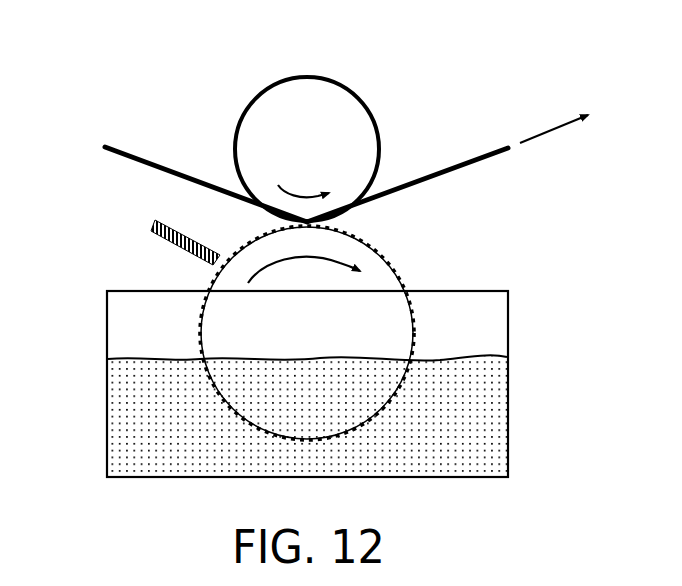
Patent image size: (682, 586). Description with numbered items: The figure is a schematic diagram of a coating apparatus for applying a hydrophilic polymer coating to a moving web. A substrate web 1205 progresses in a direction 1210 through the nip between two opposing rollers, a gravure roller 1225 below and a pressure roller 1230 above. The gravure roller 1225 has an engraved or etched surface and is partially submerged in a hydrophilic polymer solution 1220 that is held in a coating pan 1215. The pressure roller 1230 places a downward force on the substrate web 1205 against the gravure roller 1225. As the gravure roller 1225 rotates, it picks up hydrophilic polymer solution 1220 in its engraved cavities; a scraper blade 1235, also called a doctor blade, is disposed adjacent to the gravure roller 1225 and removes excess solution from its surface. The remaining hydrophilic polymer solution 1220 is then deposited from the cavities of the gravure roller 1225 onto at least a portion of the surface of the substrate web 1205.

The substrate web 1205 is at (420, 183).
The direction 1210 is at (550, 133).
The coating pan 1215 is at (508, 330).
The hydrophilic polymer solution 1220 is at (487, 436).
The gravure roller 1225 is at (198, 333).
The pressure roller 1230 is at (305, 77).
The scraper blade 1235 is at (177, 245).